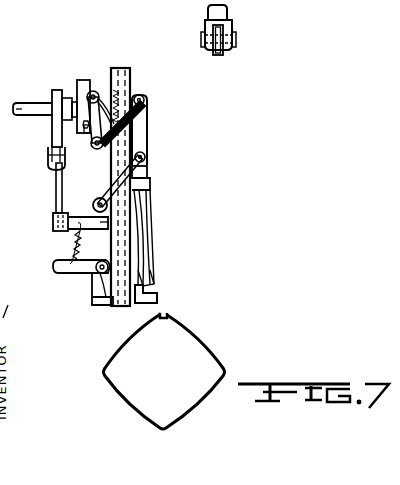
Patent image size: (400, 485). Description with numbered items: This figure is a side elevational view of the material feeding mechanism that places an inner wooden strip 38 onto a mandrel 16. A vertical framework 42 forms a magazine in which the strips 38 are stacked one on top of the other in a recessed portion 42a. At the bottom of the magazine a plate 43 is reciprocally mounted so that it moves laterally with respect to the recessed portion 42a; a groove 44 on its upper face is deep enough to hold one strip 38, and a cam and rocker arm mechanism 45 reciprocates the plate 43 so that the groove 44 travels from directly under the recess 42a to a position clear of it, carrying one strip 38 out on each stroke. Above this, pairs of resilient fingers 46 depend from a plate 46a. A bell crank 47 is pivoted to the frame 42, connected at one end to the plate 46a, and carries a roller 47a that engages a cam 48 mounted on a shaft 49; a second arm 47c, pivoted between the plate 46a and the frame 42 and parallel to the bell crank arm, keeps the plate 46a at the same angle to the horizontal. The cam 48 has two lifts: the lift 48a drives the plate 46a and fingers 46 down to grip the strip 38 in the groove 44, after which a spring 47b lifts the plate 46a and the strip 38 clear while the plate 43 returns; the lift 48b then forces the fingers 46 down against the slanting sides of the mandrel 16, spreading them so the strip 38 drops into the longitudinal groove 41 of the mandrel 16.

The mandrel 16 is at (195, 359).
The inner wooden strip 38 is at (150, 279).
The longitudinal groove 41 is at (168, 312).
The vertical framework 42 is at (130, 80).
The recessed portion 42a is at (131, 87).
The plate 43 is at (107, 303).
The groove 44 is at (157, 293).
The cam and rocker arm mechanism 45 is at (48, 168).
The resilient fingers 46 is at (140, 222).
The plate 46a is at (147, 143).
The bell crank 47 is at (128, 130).
The roller 47a is at (99, 91).
The spring 47b is at (144, 104).
The second arm 47c is at (128, 183).
The cam 48 is at (77, 82).
The cam lift 48a is at (84, 123).
The cam lift 48b is at (93, 92).
The shaft 49 is at (20, 101).